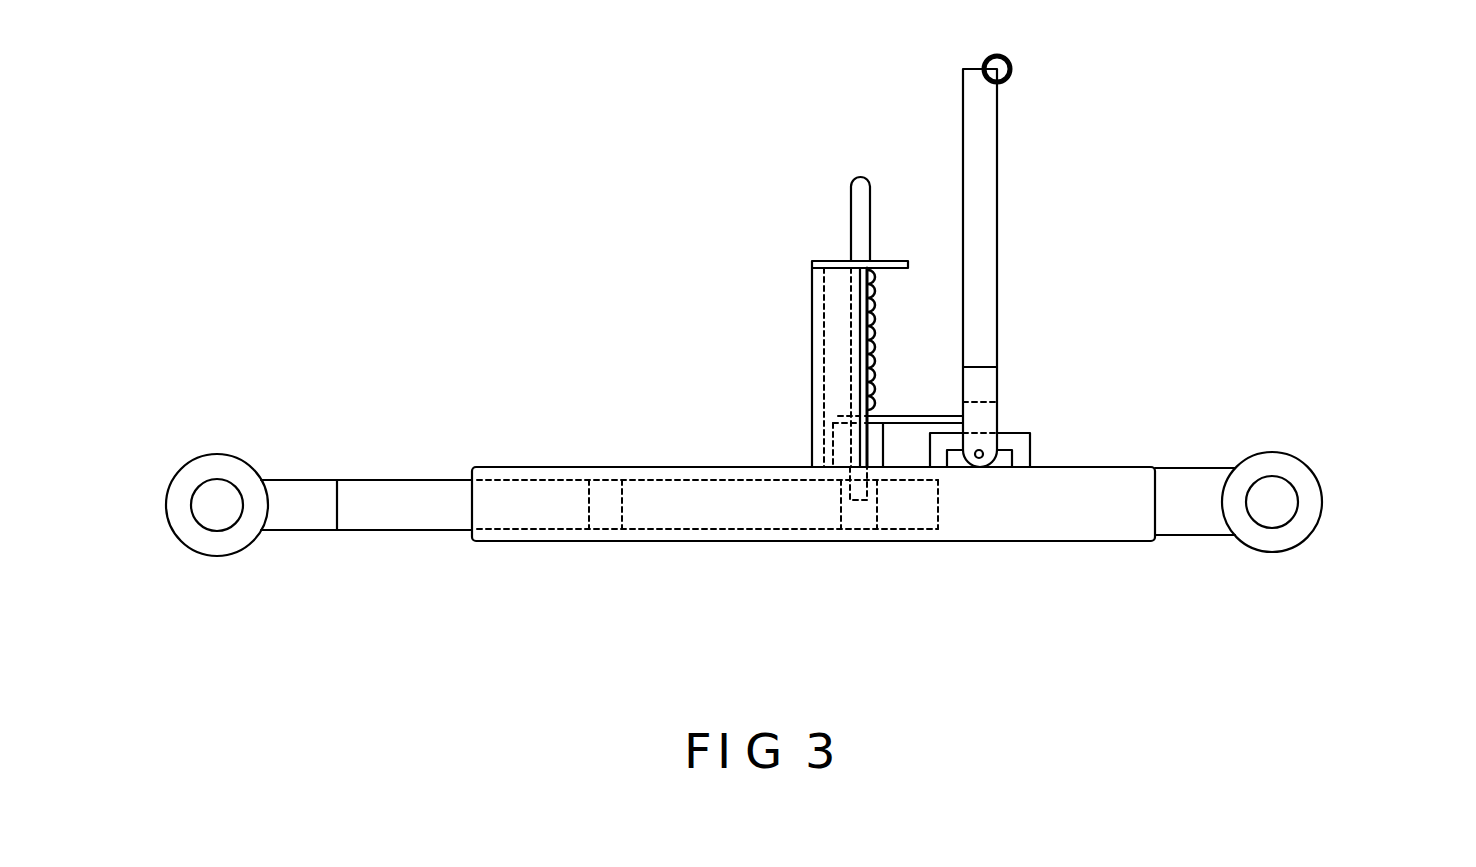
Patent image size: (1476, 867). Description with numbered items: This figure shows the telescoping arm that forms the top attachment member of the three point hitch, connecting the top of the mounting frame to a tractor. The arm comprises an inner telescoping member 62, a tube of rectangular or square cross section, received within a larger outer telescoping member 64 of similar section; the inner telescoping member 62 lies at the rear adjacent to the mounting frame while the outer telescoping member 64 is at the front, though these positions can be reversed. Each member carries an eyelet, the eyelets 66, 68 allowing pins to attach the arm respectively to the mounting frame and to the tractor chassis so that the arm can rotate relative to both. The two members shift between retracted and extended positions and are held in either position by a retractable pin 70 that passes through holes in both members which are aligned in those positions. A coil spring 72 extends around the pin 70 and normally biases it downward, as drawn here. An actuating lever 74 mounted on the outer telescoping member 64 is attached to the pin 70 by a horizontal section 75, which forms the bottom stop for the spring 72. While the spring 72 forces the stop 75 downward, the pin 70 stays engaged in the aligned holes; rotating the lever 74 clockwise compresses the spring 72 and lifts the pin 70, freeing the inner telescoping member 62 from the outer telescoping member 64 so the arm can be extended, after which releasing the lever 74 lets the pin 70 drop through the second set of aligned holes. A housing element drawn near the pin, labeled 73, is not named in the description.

The inner telescoping member 62 is at (400, 515).
The outer telescoping member 64 is at (1058, 520).
The eyelet 66 is at (213, 462).
The eyelet 68 is at (1308, 472).
The retractable pin 70 is at (850, 222).
The coil spring 72 is at (870, 338).
The pin housing 73 is at (812, 377).
The actuating lever 74 is at (983, 169).
The horizontal section 75 is at (920, 416).